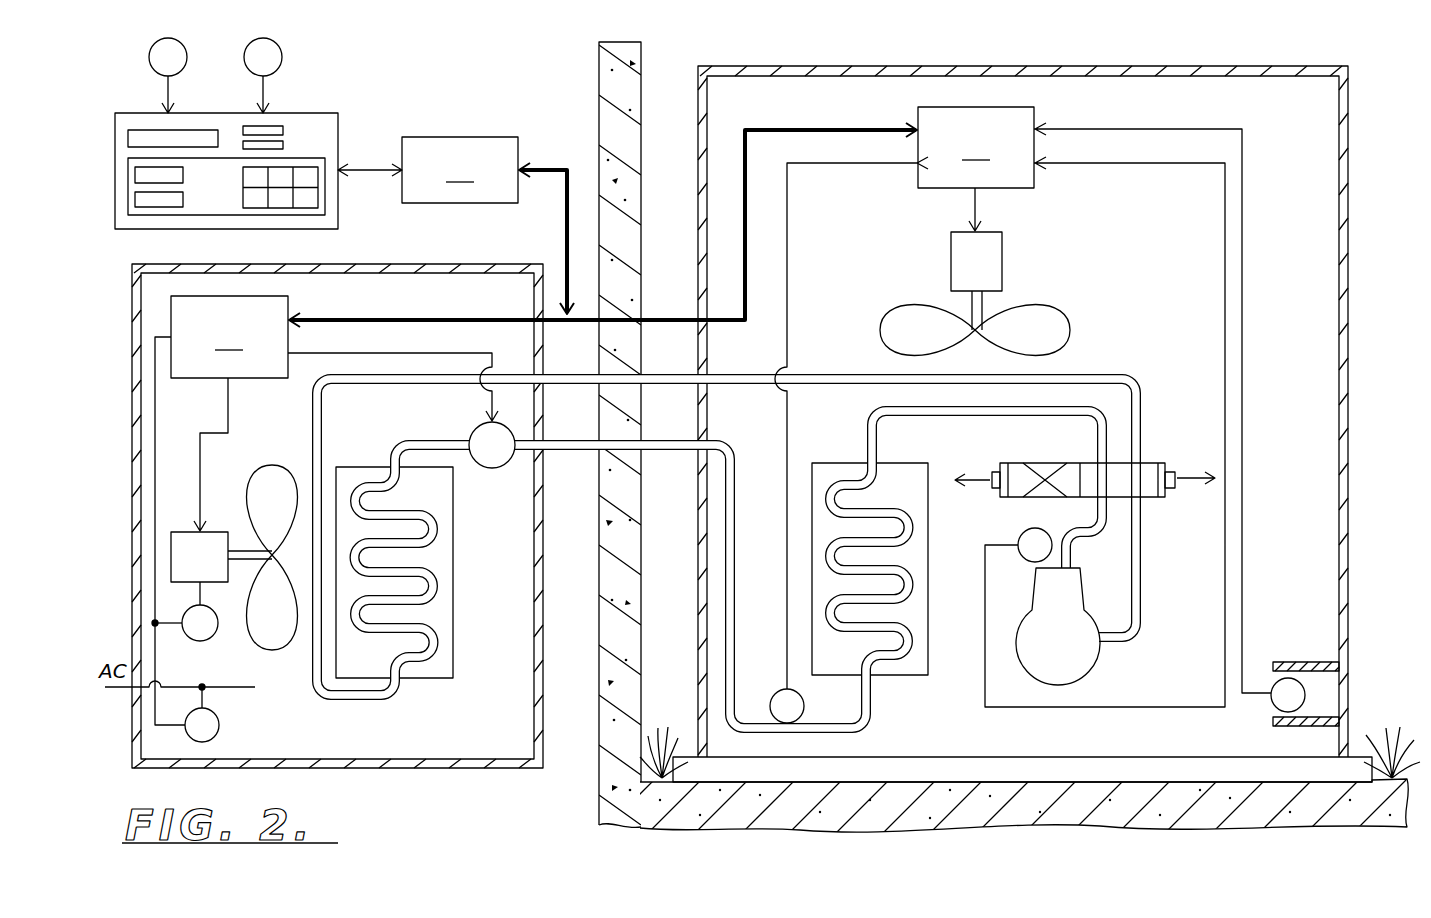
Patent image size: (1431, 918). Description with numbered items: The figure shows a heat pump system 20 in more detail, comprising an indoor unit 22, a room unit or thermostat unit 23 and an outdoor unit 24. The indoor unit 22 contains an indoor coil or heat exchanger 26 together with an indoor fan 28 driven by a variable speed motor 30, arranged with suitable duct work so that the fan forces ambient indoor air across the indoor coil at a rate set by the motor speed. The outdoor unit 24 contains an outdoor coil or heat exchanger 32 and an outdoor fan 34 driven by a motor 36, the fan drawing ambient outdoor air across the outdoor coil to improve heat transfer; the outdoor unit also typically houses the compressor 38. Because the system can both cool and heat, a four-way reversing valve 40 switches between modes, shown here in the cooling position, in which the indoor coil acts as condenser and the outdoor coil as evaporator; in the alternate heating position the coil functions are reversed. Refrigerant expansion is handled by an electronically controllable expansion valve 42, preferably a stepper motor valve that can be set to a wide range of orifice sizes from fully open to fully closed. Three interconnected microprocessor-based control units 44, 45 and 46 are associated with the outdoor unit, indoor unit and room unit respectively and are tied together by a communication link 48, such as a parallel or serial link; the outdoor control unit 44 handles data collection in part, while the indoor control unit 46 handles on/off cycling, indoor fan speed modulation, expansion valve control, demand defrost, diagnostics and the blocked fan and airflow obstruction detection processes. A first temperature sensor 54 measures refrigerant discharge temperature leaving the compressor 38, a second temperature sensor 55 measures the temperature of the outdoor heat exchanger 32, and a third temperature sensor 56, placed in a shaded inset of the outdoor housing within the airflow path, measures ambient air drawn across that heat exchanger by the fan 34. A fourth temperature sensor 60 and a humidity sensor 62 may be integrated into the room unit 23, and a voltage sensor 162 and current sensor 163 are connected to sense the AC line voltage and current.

The heat pump system 20 is at (658, 42).
The indoor unit 22 is at (488, 262).
The room unit or thermostat unit 23 is at (338, 128).
The outdoor unit 24 is at (805, 66).
The indoor coil or heat exchanger 26 is at (428, 672).
The indoor fan 28 is at (275, 472).
The variable speed motor 30 is at (215, 540).
The outdoor coil or heat exchanger 32 is at (903, 675).
The outdoor fan 34 is at (1069, 327).
The motor 36 is at (1003, 250).
The compressor 38 is at (1080, 665).
The four-way reversing valve 40 is at (1078, 463).
The electronically controllable expansion valve 42 is at (488, 468).
The outdoor control unit 44 is at (1023, 407).
The indoor control unit 45 is at (488, 225).
The room unit control unit 46 is at (326, 510).
The communication link 48 is at (464, 290).
The first temperature sensor 54 is at (1018, 535).
The second temperature sensor 55 is at (773, 697).
The third temperature sensor 56 is at (1305, 694).
The fourth temperature sensor 60 is at (149, 62).
The humidity sensor 62 is at (283, 58).
The voltage sensor 162 is at (219, 732).
The current sensor 163 is at (210, 634).